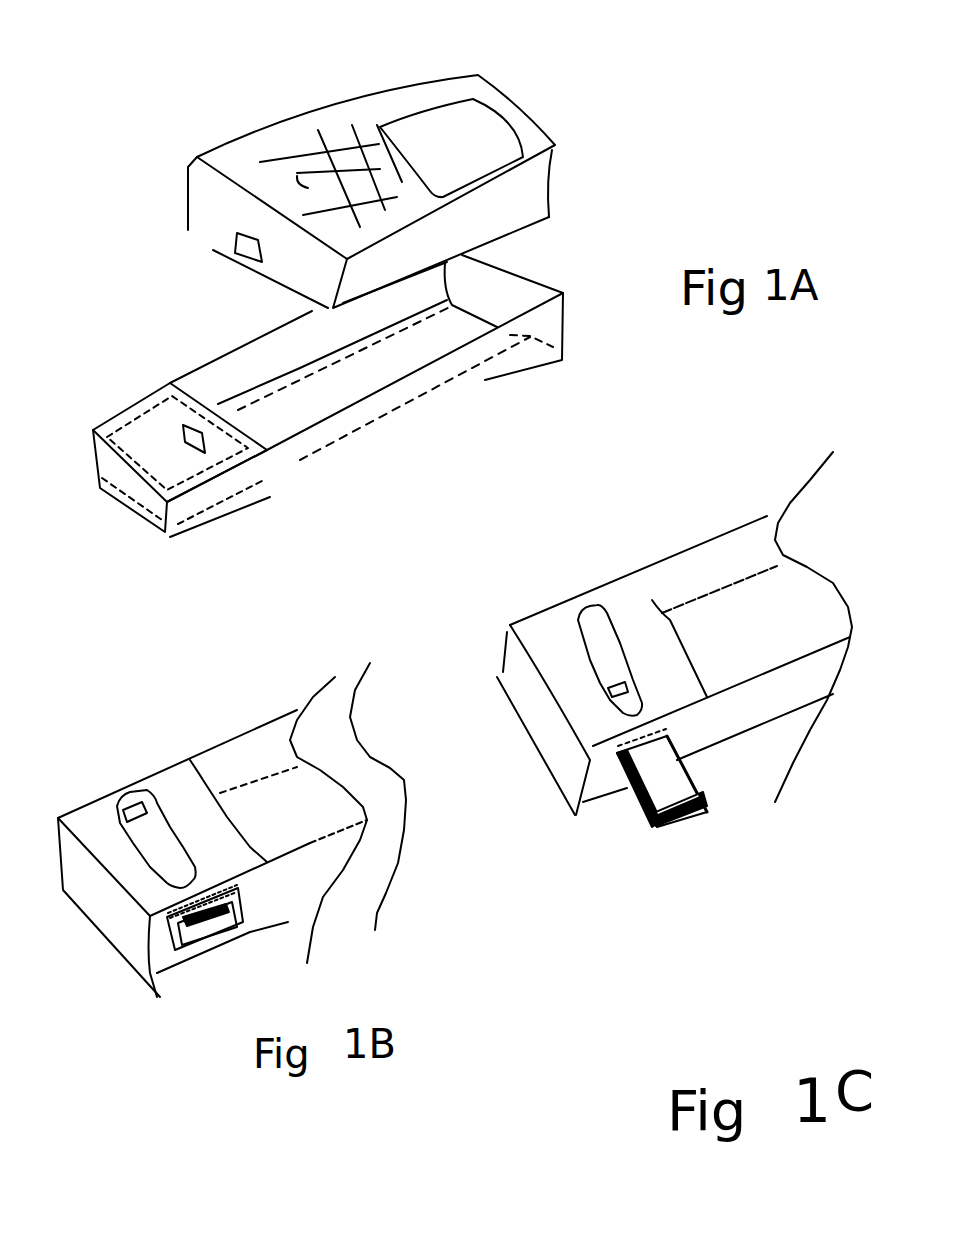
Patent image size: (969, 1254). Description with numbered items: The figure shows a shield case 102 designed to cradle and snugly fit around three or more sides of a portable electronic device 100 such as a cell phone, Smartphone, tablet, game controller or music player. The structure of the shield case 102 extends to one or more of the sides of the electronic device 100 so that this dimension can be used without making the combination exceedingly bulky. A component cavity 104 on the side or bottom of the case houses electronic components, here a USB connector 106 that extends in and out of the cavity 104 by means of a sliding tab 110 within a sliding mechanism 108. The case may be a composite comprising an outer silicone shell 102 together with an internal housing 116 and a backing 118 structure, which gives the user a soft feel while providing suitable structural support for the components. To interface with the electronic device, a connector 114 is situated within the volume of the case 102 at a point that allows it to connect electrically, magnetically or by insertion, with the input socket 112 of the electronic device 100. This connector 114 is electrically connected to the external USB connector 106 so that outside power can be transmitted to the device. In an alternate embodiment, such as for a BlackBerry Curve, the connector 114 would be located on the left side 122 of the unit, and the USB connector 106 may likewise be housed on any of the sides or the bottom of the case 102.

In FIG. 1A, the portable electronic device 100 is at (639, 85).
In FIG. 1A, the shield case 102 is at (577, 282).
In FIG. 1A, the component cavity 104 is at (132, 533).
In FIG. 1C, the USB connector 106 is at (628, 826).
In FIG. 1B, the sliding mechanism 108 is at (150, 826).
In FIG. 1C, the sliding mechanism 108 is at (596, 619).
In FIG. 1B, the sliding tab 110 is at (134, 789).
In FIG. 1C, the sliding tab 110 is at (620, 700).
In FIG. 1A, the input socket 112 is at (233, 267).
In FIG. 1A, the connector 114 is at (218, 447).
In FIG. 1A, the internal housing 116 is at (225, 500).
In FIG. 1A, the backing 118 is at (440, 330).
In FIG. 1A, the left side 122 is at (333, 91).